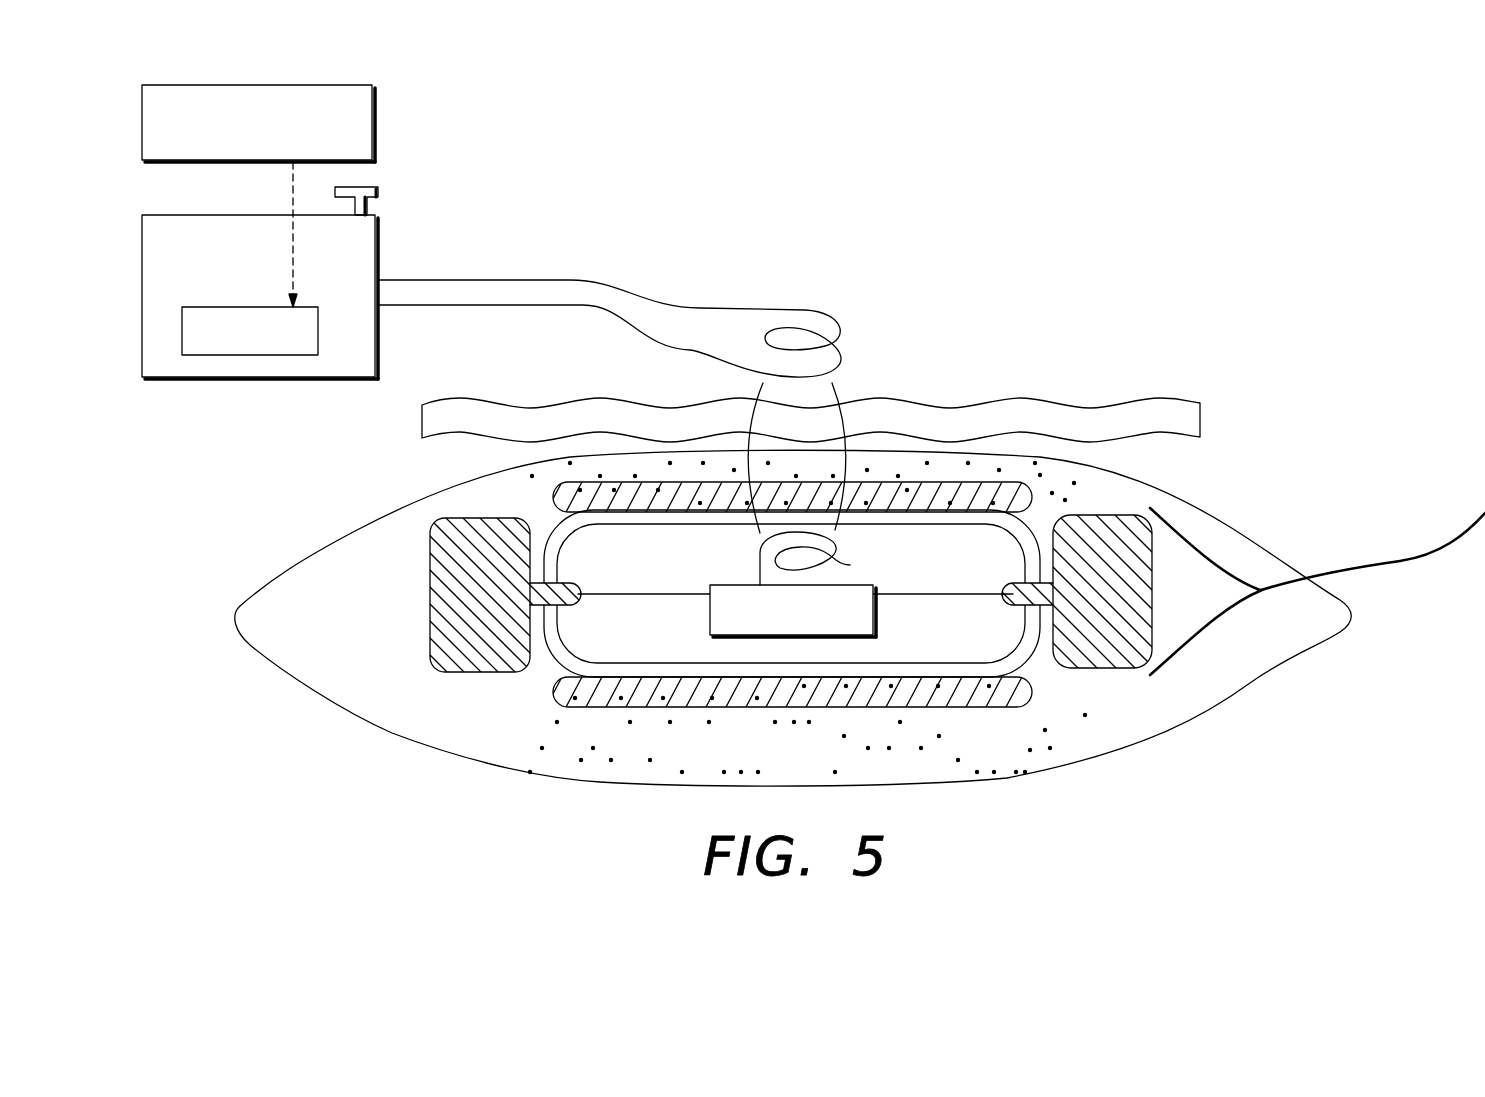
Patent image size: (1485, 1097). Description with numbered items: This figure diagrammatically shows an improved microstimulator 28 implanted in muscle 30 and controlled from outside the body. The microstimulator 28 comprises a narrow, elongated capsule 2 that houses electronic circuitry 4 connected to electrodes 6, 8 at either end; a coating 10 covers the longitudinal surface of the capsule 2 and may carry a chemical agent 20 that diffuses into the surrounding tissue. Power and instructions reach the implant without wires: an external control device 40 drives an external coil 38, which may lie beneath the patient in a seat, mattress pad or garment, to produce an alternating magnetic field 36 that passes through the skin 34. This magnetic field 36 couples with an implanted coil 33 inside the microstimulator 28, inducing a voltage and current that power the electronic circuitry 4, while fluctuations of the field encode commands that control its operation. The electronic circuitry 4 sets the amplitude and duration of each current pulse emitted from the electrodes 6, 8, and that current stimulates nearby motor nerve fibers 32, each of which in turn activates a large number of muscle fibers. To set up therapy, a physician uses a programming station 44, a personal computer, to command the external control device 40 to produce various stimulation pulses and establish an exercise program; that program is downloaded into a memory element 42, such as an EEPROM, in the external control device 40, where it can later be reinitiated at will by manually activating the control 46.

The capsule 2 is at (1030, 650).
The electronic circuitry 4 is at (878, 612).
The electrode 6 is at (488, 600).
The electrode 8 is at (1111, 597).
The coating 10 is at (1012, 698).
The chemical agent 20 is at (557, 693).
The improved microstimulator 28 is at (395, 610).
The muscle 30 is at (367, 685).
The motor nerve fibers 32 is at (1417, 558).
The implanted coil 33 is at (850, 565).
The skin 34 is at (540, 405).
The magnetic field 36 is at (840, 393).
The external coil 38 is at (803, 310).
The external control device 40 is at (380, 256).
The memory element 42 is at (320, 330).
The programming station 44 is at (372, 102).
The control 46 is at (365, 186).